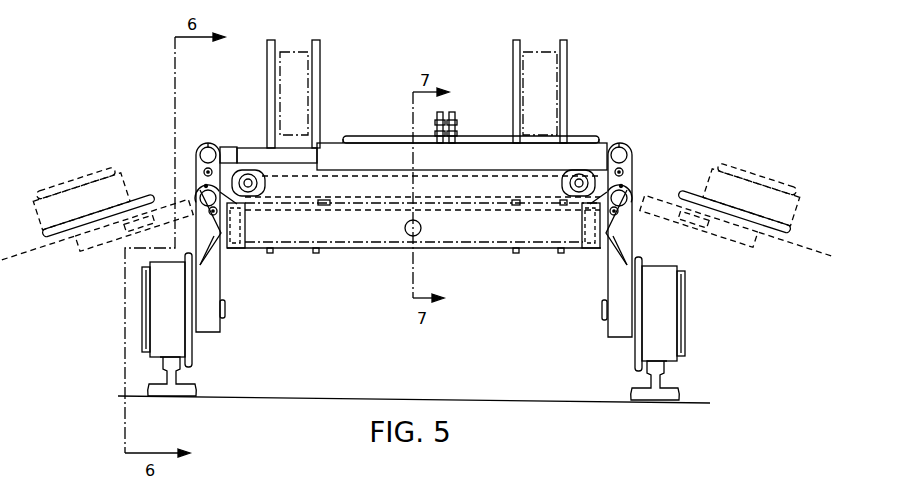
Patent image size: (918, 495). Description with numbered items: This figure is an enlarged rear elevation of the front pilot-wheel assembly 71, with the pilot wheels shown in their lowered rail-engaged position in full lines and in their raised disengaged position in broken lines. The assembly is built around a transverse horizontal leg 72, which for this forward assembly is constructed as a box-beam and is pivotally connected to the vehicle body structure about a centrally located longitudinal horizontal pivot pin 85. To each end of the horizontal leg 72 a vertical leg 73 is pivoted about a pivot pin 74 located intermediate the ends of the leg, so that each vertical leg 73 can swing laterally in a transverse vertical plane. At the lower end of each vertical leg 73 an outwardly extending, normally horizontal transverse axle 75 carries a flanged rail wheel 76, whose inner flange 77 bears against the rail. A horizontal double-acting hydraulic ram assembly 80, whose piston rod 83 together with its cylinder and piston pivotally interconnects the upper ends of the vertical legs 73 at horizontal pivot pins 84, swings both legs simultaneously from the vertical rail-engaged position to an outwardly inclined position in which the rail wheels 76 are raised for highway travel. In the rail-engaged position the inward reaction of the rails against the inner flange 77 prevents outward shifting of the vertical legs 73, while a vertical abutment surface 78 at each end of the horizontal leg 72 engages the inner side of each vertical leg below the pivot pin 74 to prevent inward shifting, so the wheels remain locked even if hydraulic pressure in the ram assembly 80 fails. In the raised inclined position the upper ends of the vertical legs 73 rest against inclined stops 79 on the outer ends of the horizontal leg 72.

The front pilot-wheel assembly 71 is at (505, 252).
The transverse horizontal leg 72 is at (361, 244).
The vertical leg 73 is at (222, 290).
The pivot pin 74 is at (198, 191).
The transverse axle 75 is at (226, 317).
The flanged rail wheel 76 is at (190, 347).
The inner flange 77 is at (190, 364).
The vertical abutment surface 78 is at (202, 266).
The inclined stop 79 is at (240, 168).
The horizontal double-acting hydraulic ram assembly 80 is at (480, 146).
The piston rod 83 is at (312, 146).
The horizontal pivot pin 84 is at (202, 149).
The longitudinal horizontal pivot pin 85 is at (423, 228).